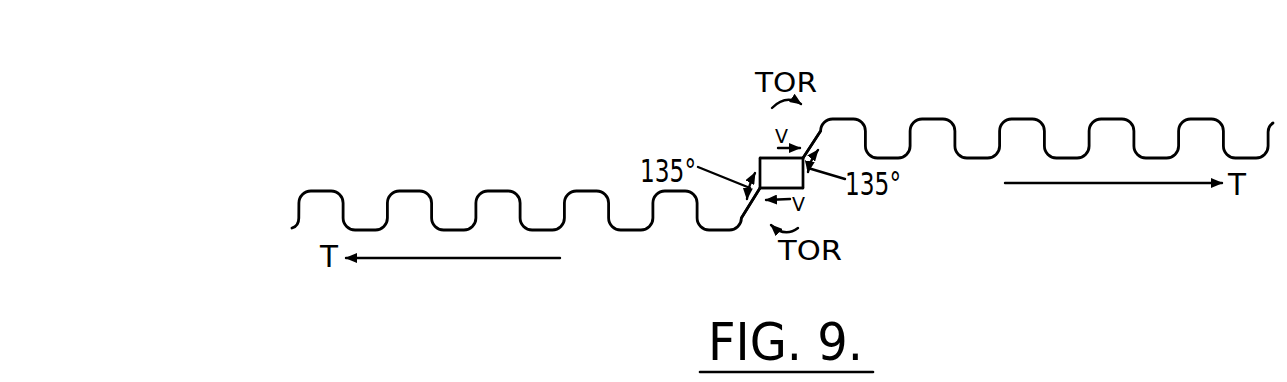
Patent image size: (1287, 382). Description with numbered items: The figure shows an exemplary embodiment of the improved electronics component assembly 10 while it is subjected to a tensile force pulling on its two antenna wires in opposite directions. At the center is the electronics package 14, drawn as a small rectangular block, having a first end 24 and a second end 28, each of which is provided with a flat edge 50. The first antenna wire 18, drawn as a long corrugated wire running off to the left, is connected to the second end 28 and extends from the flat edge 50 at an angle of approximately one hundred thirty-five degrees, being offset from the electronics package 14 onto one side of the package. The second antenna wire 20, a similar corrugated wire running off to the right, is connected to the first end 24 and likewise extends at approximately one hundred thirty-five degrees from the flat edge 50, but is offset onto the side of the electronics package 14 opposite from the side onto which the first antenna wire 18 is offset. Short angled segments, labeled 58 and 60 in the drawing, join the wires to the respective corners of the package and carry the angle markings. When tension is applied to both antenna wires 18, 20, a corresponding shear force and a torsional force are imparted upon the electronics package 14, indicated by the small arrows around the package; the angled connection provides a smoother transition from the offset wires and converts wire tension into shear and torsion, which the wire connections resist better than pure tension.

The electronics component assembly 10 is at (648, 79).
The electronics package 14 is at (766, 158).
The first antenna wire 18 is at (410, 191).
The second antenna wire 20 is at (1201, 119).
The first end 24 is at (805, 184).
The second end 28 is at (760, 158).
The flat edge 50 is at (760, 167).
The first connecting segment 58 is at (749, 200).
The second connecting segment 60 is at (805, 158).